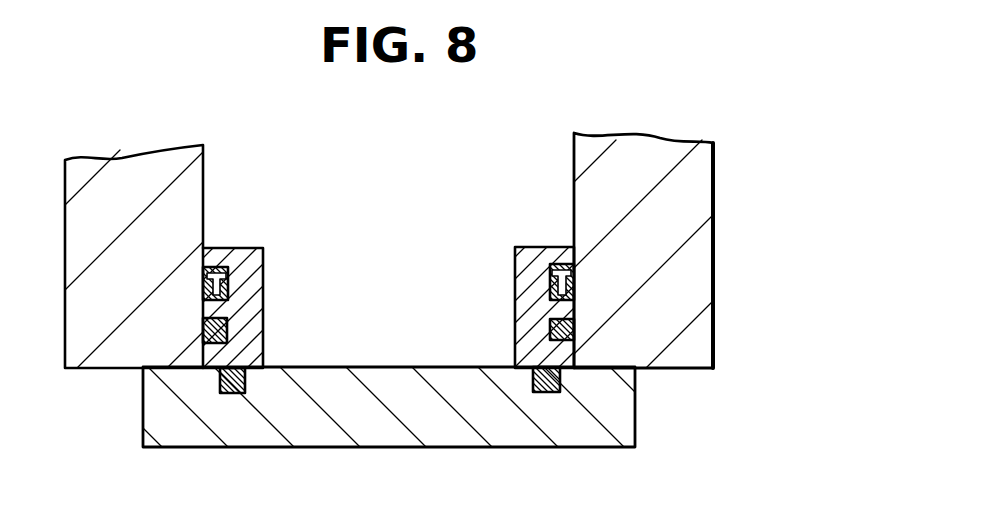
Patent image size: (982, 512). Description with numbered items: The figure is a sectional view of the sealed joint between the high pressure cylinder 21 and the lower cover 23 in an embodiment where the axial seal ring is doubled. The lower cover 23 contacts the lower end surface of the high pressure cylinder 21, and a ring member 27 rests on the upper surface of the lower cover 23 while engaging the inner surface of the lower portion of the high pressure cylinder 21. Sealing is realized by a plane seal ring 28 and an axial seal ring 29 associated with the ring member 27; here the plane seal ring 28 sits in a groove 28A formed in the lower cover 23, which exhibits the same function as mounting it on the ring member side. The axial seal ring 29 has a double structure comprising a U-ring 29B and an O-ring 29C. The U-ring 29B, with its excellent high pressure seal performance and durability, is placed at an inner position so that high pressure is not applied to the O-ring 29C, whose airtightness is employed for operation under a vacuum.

The high pressure cylinder 21 is at (670, 183).
The lower cover 23 is at (372, 427).
The ring member 27 is at (528, 262).
The plane seal ring 28 is at (561, 439).
The groove 28A is at (545, 393).
The axial seal ring 29 is at (613, 296).
The U-ring 29B is at (550, 288).
The O-ring 29C is at (578, 287).